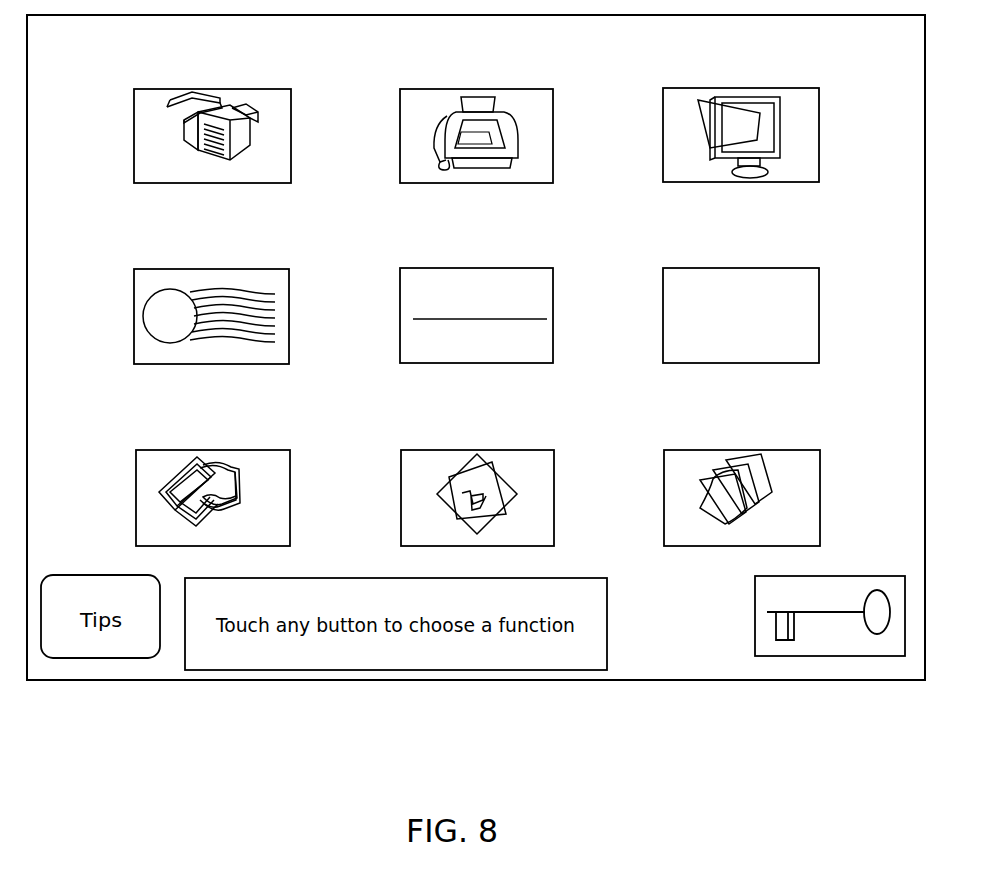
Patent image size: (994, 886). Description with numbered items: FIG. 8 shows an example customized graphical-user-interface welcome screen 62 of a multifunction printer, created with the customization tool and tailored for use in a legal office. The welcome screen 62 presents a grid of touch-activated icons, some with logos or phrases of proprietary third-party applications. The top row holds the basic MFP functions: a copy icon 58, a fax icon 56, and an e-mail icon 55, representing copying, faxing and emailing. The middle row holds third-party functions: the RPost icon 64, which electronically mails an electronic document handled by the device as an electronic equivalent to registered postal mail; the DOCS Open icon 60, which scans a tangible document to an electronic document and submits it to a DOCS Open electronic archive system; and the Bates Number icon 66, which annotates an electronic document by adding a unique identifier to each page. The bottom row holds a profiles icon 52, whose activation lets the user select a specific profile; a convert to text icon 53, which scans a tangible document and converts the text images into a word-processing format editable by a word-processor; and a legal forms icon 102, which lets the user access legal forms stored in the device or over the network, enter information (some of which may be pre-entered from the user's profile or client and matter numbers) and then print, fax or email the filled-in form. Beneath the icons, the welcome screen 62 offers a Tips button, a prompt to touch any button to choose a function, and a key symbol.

The welcome screen 62 is at (103, 682).
The copy icon 58 is at (134, 135).
The fax icon 56 is at (400, 135).
The e-mail icon 55 is at (663, 135).
The RPost icon 64 is at (134, 314).
The DOCS Open icon 60 is at (400, 314).
The Bates Number icon 66 is at (663, 314).
The profiles icon 52 is at (136, 493).
The convert to text icon 53 is at (401, 493).
The legal forms icon 102 is at (664, 493).